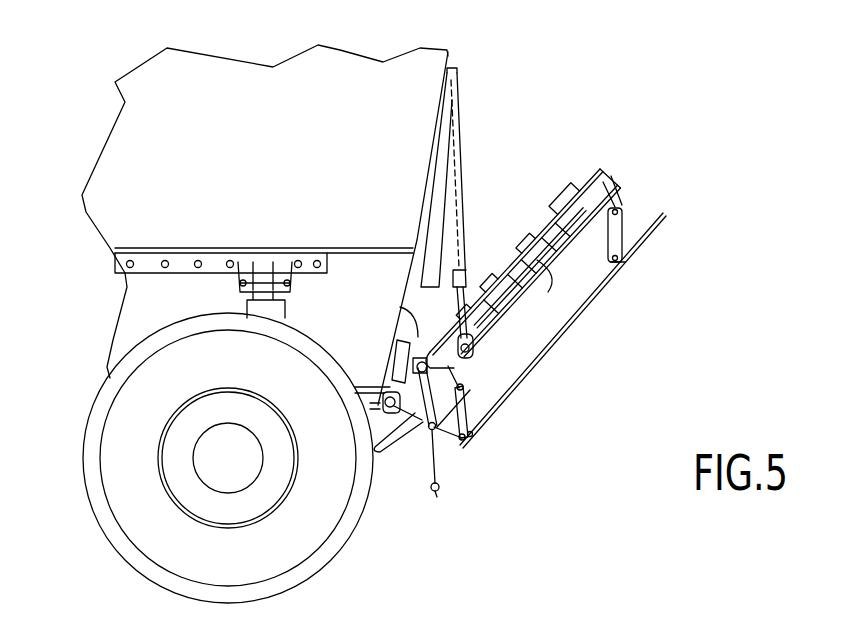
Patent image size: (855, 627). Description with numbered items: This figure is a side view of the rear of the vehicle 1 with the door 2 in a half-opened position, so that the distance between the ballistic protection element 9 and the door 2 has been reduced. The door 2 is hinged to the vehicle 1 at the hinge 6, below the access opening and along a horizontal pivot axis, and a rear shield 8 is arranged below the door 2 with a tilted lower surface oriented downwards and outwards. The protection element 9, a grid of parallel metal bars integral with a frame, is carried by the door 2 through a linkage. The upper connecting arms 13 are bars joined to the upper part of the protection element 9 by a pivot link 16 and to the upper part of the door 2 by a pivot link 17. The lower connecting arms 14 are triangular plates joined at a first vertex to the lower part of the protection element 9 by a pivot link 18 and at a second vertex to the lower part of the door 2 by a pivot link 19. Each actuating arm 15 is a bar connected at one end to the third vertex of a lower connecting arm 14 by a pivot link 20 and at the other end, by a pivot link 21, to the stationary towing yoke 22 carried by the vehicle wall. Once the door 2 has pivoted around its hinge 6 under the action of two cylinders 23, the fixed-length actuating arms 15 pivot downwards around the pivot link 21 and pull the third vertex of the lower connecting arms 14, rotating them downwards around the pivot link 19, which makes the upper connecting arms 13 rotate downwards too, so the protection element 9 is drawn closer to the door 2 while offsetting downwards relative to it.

The vehicle 1 is at (298, 80).
The door 2 is at (610, 172).
The hinge 6 is at (380, 403).
The rear shield 8 is at (373, 413).
The ballistic protection element 9 is at (650, 242).
The upper connecting arms 13 is at (620, 232).
The lower connecting arms 14 is at (470, 400).
The actuating arm 15 is at (392, 425).
The pivot link 16 is at (623, 260).
The pivot link 17 is at (622, 210).
The pivot link 18 is at (470, 440).
The pivot link 19 is at (464, 385).
The pivot link 20 is at (438, 430).
The pivot link 21 is at (400, 358).
The towing yoke 22 is at (420, 357).
The cylinders 23 is at (460, 193).